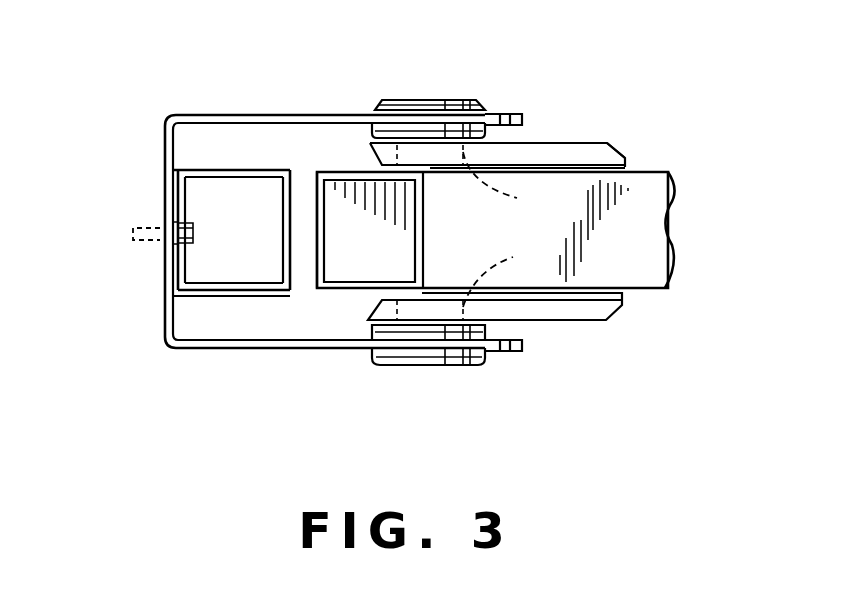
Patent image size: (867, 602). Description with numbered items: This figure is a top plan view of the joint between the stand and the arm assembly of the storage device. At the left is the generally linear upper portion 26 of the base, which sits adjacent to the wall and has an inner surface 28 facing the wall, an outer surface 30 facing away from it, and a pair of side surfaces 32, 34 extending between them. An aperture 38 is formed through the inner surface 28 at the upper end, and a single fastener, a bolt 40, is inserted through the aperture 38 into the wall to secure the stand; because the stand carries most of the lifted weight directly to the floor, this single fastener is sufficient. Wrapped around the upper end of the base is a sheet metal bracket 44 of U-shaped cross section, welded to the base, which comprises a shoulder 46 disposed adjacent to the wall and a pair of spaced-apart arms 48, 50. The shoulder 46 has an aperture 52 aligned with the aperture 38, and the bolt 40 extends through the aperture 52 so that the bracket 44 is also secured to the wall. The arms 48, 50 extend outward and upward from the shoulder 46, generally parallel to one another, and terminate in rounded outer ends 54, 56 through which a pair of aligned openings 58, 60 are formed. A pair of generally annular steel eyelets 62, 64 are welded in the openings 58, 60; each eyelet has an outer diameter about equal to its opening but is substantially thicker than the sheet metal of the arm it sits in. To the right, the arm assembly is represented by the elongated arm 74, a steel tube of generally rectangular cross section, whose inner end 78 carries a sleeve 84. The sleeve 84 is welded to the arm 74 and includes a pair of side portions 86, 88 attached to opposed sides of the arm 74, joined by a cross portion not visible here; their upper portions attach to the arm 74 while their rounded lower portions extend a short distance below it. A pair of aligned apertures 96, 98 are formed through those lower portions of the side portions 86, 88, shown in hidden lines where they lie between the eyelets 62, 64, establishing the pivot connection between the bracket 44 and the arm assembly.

The upper portion 26 is at (183, 224).
The inner surface 28 is at (183, 190).
The outer surface 30 is at (275, 186).
The side surface 32 is at (198, 170).
The side surface 34 is at (232, 292).
The aperture 38 is at (176, 218).
The bolt 40 is at (188, 225).
The bracket 44 is at (323, 230).
The shoulder 46 is at (162, 288).
The arm 48 is at (333, 113).
The arm 50 is at (291, 350).
The aperture 52 is at (160, 250).
The outer end 54 is at (517, 116).
The outer end 56 is at (512, 352).
The opening 58 is at (500, 113).
The opening 60 is at (493, 352).
The eyelet 62 is at (413, 100).
The eyelet 64 is at (397, 363).
The arm 74 is at (545, 241).
The inner end 78 is at (635, 268).
The sleeve 84 is at (539, 115).
The side portion 86 is at (610, 147).
The side portion 88 is at (583, 313).
The aperture 96 is at (511, 186).
The aperture 98 is at (507, 271).